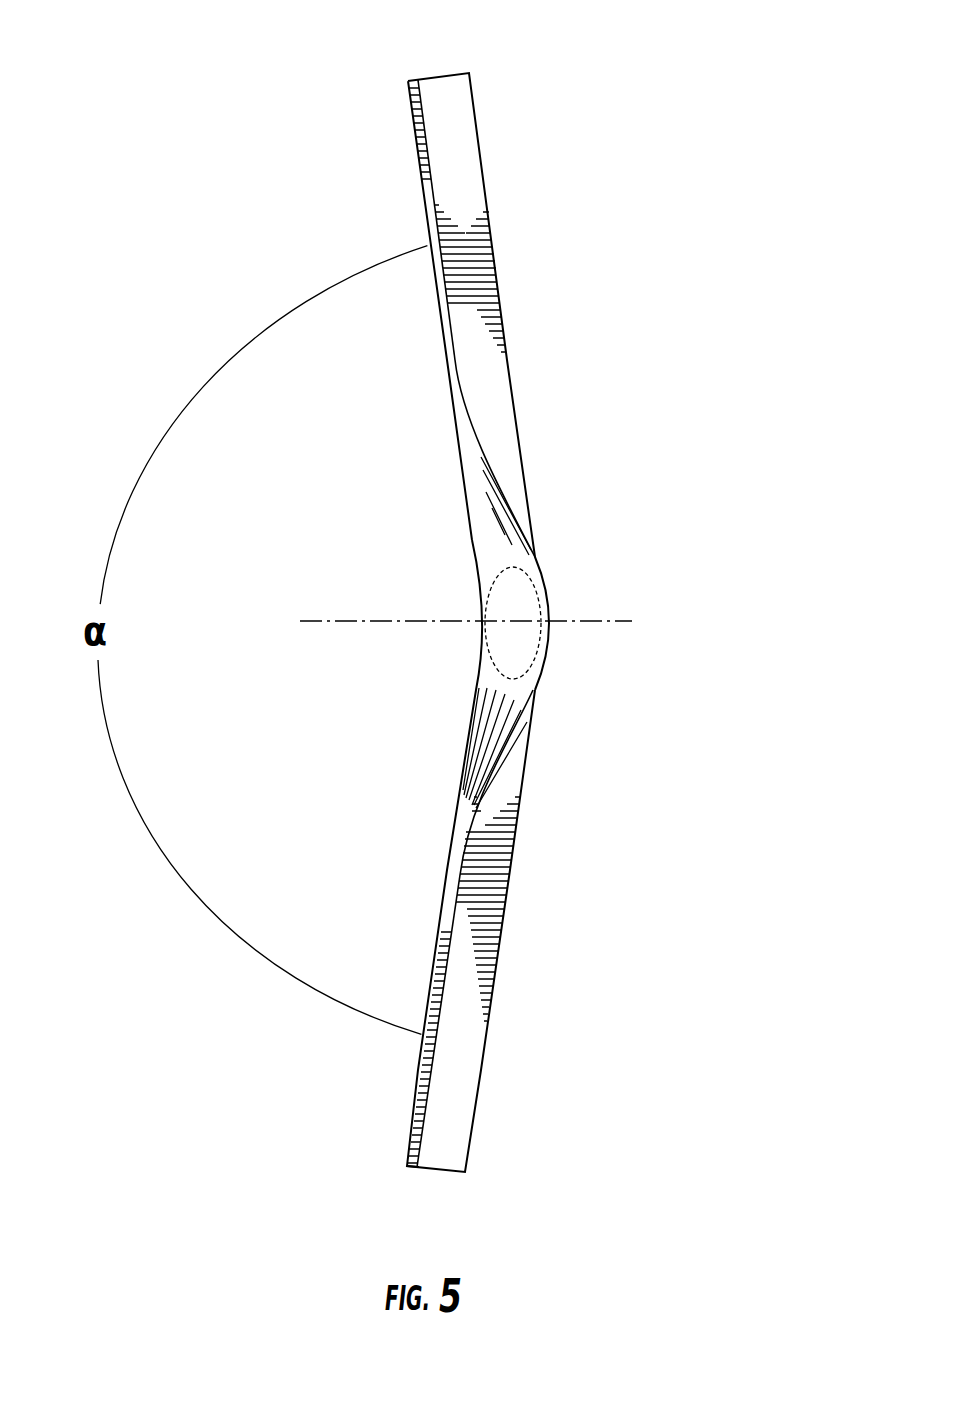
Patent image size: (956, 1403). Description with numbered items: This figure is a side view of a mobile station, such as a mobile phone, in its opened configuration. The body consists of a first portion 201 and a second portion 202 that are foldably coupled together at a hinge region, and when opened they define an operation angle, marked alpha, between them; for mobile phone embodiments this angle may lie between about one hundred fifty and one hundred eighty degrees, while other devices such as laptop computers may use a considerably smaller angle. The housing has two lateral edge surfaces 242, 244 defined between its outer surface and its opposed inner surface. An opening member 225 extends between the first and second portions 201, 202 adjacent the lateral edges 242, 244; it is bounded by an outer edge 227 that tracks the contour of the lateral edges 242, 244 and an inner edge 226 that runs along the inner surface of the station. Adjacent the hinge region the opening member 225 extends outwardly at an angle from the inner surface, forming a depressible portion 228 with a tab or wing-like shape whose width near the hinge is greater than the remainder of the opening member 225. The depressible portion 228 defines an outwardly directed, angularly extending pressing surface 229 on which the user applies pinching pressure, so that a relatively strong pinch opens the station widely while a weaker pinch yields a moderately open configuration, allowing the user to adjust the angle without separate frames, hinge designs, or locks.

The first portion 201 is at (440, 1150).
The second portion 202 is at (446, 97).
The opening member 225 is at (473, 787).
The inner edge 226 is at (410, 1167).
The outer edge 227 is at (407, 1167).
The depressible portion 228 is at (490, 702).
The pressing surface 229 is at (512, 565).
The lateral edge surface 242 is at (453, 1062).
The lateral edge surface 244 is at (462, 187).